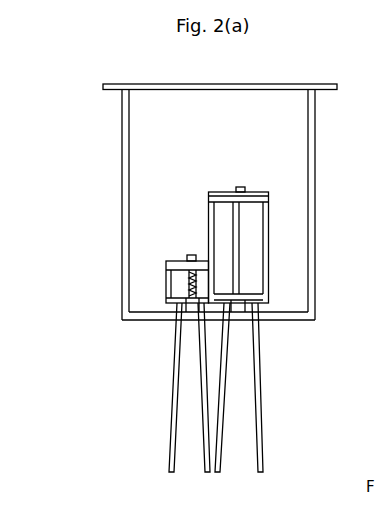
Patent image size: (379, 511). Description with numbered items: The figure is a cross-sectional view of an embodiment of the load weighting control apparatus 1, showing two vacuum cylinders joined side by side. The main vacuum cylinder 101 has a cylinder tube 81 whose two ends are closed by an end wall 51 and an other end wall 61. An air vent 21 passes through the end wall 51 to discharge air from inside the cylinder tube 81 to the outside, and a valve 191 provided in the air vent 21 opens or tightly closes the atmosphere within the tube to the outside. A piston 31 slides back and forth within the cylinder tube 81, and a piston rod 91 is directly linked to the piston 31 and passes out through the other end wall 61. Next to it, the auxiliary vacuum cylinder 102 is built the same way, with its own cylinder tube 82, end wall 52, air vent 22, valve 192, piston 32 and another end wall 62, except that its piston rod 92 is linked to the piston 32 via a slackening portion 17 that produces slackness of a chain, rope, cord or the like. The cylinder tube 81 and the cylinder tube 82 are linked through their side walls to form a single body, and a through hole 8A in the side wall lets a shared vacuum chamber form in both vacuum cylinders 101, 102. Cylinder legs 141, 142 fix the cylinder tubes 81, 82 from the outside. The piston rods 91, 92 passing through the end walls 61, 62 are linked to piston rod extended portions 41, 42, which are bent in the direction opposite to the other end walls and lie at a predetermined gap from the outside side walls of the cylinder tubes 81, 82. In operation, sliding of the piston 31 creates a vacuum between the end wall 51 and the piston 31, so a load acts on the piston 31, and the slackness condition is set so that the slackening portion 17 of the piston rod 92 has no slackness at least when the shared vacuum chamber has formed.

The semiconductor laser device 1 is at (265, 86).
The piston rod extended portion 42 is at (122, 133).
The piston rod extended portion 41 is at (313, 296).
The main vacuum cylinder 101 is at (263, 161).
The auxiliary vacuum cylinder 102 is at (153, 253).
The piston 31 is at (260, 202).
The cylinder tube 81 is at (270, 220).
The piston rod 91 is at (240, 246).
The end wall 51 is at (224, 191).
The valve 191 is at (241, 187).
The air vent 21 is at (246, 192).
The piston 32 is at (168, 262).
The end wall 52 is at (178, 260).
The valve 192 is at (195, 255).
The air vent 22 is at (189, 256).
The cylinder tube 82 is at (166, 268).
The slackening portion 17 is at (172, 292).
The through hole 8A is at (207, 268).
The piston rod 92 is at (180, 362).
The cylinder leg 142 is at (176, 415).
The end wall 62 is at (177, 317).
The end wall 61 is at (263, 304).
The cylinder leg 141 is at (262, 418).